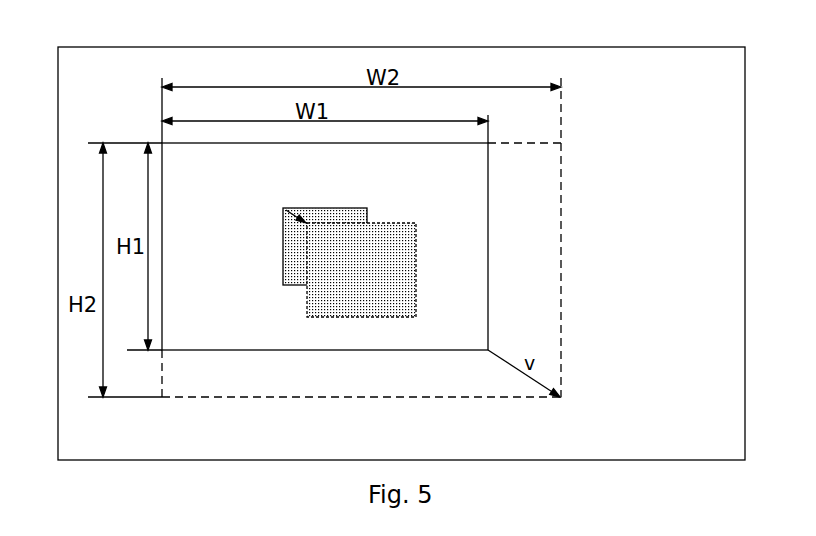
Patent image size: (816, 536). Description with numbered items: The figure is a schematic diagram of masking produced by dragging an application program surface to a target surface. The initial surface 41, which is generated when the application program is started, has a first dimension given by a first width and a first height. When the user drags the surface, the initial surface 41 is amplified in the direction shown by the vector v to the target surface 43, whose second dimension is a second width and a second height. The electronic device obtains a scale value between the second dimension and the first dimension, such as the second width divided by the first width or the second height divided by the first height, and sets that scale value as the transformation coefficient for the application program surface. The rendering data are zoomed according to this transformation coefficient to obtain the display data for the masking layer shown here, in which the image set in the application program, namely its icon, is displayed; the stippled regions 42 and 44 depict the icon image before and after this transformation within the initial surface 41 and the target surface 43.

The initial surface 41 is at (490, 232).
The first object 42 is at (335, 207).
The target surface 43 is at (562, 285).
The second object 44 is at (388, 238).